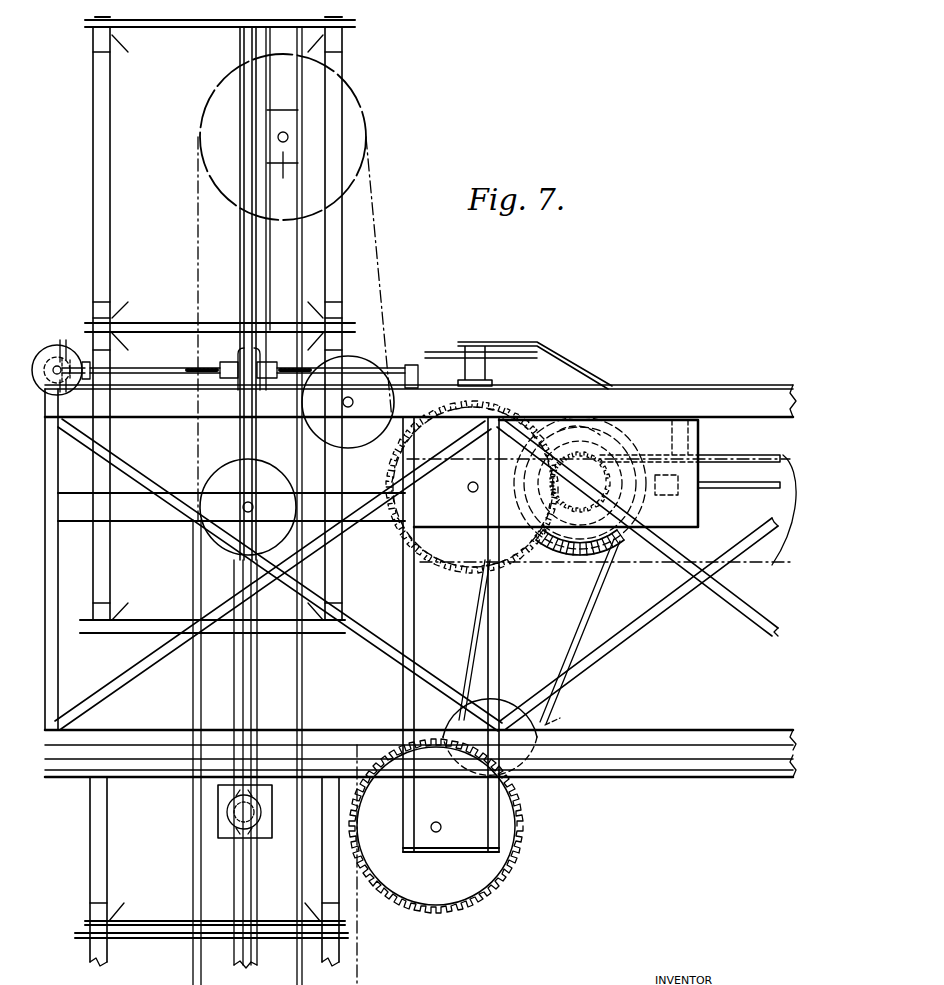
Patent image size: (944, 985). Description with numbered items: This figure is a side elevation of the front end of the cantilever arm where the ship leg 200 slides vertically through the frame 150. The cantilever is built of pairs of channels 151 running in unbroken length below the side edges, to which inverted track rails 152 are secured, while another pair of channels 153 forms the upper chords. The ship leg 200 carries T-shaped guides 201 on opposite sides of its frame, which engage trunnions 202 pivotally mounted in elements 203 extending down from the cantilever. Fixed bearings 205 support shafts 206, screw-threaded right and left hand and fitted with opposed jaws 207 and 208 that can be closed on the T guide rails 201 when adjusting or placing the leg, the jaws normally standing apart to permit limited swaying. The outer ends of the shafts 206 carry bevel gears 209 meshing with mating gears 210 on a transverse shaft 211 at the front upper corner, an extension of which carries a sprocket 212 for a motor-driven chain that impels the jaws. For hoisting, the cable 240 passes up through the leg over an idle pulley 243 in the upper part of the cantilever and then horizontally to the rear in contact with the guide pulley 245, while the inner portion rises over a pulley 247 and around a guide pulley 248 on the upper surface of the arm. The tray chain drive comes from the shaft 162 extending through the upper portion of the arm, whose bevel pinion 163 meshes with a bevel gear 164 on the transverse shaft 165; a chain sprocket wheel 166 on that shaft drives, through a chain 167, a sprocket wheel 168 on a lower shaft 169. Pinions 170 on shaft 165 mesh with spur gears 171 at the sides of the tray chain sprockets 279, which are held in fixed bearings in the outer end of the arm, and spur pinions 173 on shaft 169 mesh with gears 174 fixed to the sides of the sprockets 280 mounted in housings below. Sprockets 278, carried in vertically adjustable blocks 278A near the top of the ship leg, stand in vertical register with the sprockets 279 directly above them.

The frame 150 is at (48, 549).
The channels 151 is at (716, 728).
The inverted track rails 152 is at (613, 772).
The channels 153 is at (727, 385).
The shaft 162 is at (746, 486).
The bevel pinion 163 is at (682, 530).
The bevel gear 164 is at (591, 556).
The transverse shaft 165 is at (600, 450).
The chain sprocket wheel 166 is at (588, 445).
The chain 167 is at (592, 612).
The sprocket wheel 168 is at (470, 698).
The shaft 169 is at (562, 719).
The pinions 170 is at (575, 440).
The spur gears 171 is at (546, 538).
The spur pinions 173 is at (510, 695).
The gears 174 is at (506, 870).
The ship leg 200 is at (90, 812).
The T-shaped guides 201 is at (250, 306).
The trunnions 202 is at (226, 812).
The elements 203 is at (261, 842).
The bearings 205 is at (84, 362).
The shafts 206 is at (172, 367).
The jaw 207 is at (274, 370).
The jaw 208 is at (220, 373).
The bevel gears 209 is at (52, 393).
The mating gears 210 is at (45, 362).
The transverse shaft 211 is at (44, 376).
The sprocket 212 is at (62, 342).
The cable 240 is at (195, 583).
The idle pulley 243 is at (206, 478).
The guide pulley 245 is at (727, 455).
The pulley 247 is at (362, 370).
The guide pulley 248 is at (443, 352).
The sprockets 278 is at (362, 108).
The vertically adjustable blocks 278A is at (287, 157).
The sprockets 279 is at (456, 574).
The sprockets 280 is at (437, 906).